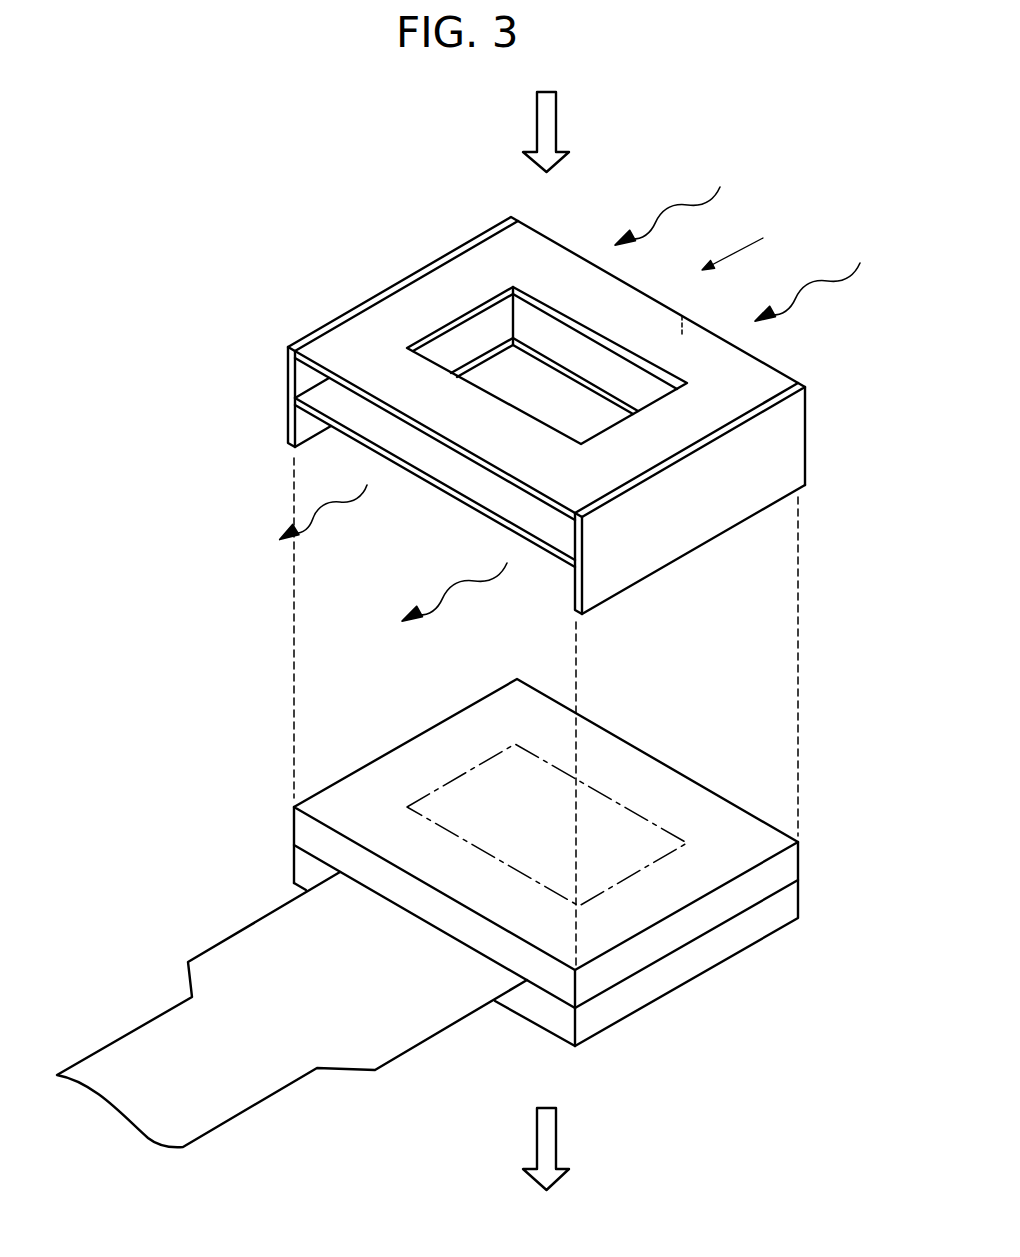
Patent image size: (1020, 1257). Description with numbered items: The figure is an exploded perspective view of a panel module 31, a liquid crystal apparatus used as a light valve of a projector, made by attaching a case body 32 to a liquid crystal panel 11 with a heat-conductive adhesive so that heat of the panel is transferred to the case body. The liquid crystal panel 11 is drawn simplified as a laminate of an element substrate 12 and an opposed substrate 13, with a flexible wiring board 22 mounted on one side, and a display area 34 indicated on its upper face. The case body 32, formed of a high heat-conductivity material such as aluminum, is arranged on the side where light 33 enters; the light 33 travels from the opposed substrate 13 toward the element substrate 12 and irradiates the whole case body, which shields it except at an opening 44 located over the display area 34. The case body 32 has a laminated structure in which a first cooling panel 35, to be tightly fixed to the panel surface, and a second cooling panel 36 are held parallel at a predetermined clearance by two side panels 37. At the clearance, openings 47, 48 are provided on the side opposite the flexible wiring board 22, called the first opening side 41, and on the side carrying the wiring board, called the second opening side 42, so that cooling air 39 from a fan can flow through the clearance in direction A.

The panel module 31 is at (798, 146).
The case body 32 is at (818, 435).
The light 33 is at (556, 120).
The display area 34 is at (615, 797).
The first cooling panel 35 is at (392, 430).
The second cooling panel 36 is at (368, 318).
The side panels 37 is at (288, 383).
The cooling air 39 is at (830, 292).
The first opening side 41 is at (572, 234).
The second opening side 42 is at (458, 479).
The opening 44 is at (468, 315).
The opening 47 is at (685, 317).
The opening 48 is at (522, 505).
The liquid crystal panel 11 is at (822, 855).
The element substrate 12 is at (673, 973).
The opposed substrate 13 is at (733, 902).
The flexible wiring board 22 is at (243, 948).
The direction A is at (743, 244).